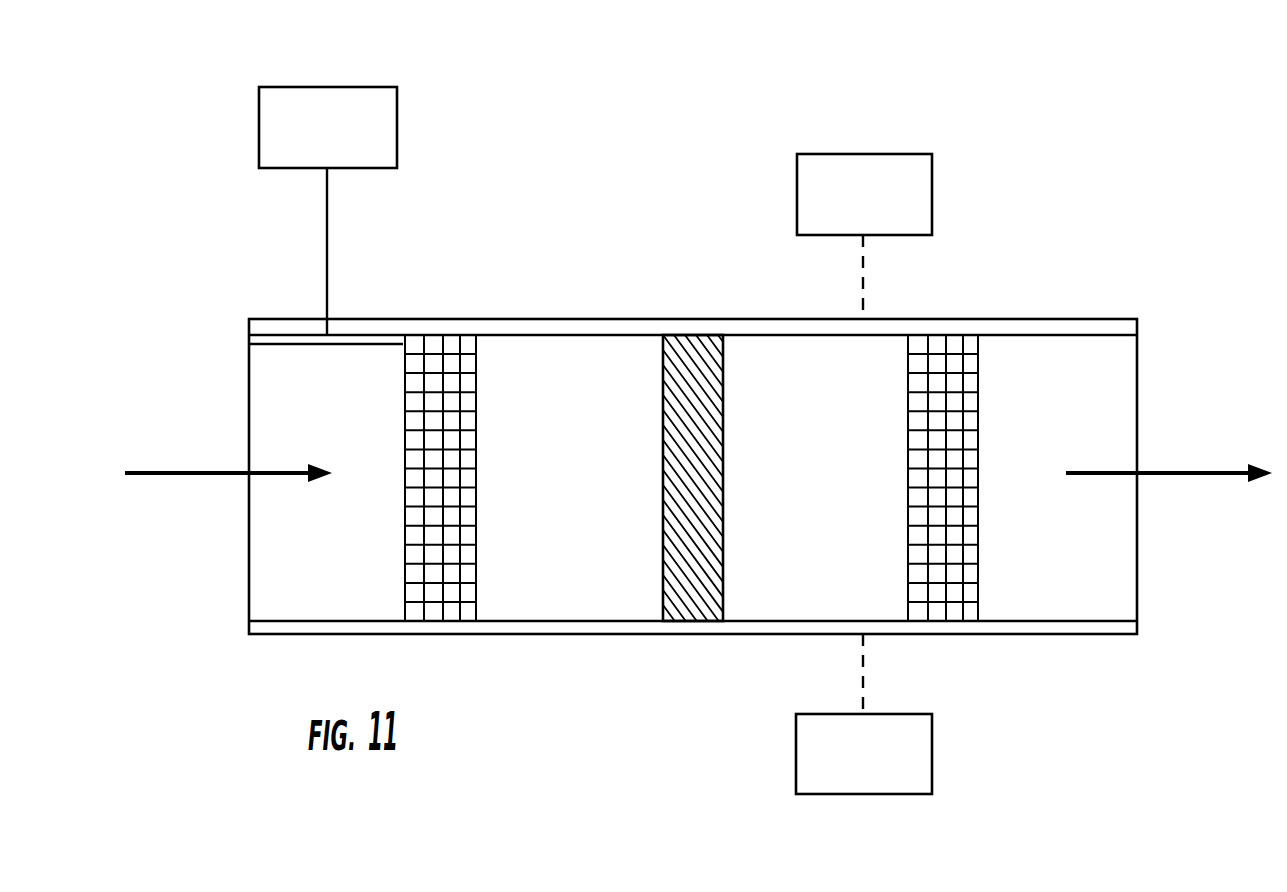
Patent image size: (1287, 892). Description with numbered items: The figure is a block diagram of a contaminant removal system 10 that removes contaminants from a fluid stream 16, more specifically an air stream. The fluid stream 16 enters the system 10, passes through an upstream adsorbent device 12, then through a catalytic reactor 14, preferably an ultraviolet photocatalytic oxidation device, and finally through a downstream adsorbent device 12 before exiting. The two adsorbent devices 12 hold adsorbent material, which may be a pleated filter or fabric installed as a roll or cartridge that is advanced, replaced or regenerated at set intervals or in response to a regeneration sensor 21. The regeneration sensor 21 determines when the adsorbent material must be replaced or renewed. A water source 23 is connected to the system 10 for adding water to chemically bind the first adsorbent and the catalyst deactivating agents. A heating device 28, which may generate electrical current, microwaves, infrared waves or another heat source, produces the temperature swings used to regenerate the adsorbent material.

The contaminant removal system 10 is at (713, 172).
The adsorbent device 12 is at (437, 360).
The catalytic reactor 14 is at (695, 590).
The fluid stream 16 is at (223, 440).
The regeneration sensor 21 is at (932, 193).
The water source 23 is at (397, 129).
The heating device 28 is at (932, 757).